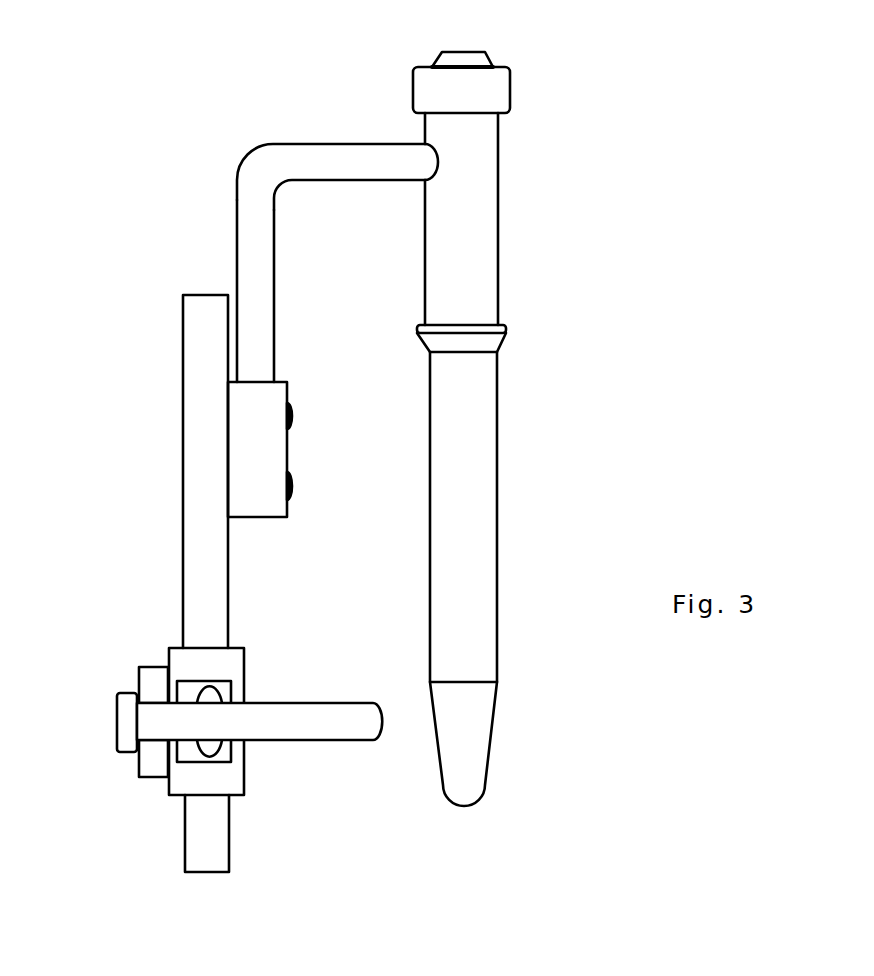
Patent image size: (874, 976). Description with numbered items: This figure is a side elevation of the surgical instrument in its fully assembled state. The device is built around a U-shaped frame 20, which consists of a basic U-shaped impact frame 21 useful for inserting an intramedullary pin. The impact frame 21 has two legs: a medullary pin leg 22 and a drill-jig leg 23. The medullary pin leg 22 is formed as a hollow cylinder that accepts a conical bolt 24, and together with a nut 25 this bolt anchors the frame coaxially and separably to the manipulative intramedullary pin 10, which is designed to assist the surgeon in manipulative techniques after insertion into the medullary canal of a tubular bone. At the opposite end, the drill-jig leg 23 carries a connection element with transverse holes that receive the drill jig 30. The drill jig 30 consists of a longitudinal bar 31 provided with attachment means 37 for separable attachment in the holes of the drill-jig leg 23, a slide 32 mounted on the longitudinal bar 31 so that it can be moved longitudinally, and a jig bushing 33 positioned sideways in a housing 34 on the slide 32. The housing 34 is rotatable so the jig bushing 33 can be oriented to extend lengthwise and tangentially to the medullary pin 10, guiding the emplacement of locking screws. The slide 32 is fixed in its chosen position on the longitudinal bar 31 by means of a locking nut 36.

The manipulative intramedullary pin 10 is at (551, 463).
The U-shaped frame 20 is at (347, 231).
The impact frame 21 is at (277, 163).
The medullary pin leg 22 is at (465, 248).
The drill-jig leg 23 is at (250, 450).
The conical bolt 24 is at (467, 58).
The nut 25 is at (482, 89).
The drill jig 30 is at (76, 741).
The longitudinal bar 31 is at (202, 318).
The slide 32 is at (187, 663).
The jig bushing 33 is at (322, 722).
The housing 34 is at (205, 750).
The locking nut 36 is at (157, 685).
The attachment means 37 is at (293, 417).